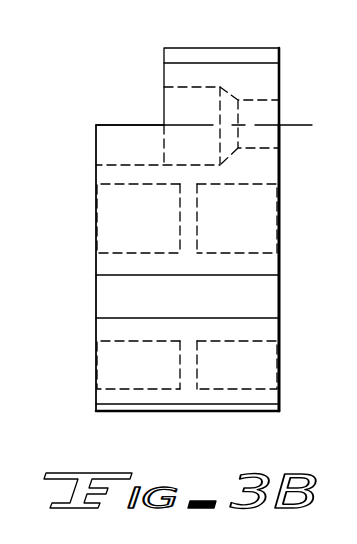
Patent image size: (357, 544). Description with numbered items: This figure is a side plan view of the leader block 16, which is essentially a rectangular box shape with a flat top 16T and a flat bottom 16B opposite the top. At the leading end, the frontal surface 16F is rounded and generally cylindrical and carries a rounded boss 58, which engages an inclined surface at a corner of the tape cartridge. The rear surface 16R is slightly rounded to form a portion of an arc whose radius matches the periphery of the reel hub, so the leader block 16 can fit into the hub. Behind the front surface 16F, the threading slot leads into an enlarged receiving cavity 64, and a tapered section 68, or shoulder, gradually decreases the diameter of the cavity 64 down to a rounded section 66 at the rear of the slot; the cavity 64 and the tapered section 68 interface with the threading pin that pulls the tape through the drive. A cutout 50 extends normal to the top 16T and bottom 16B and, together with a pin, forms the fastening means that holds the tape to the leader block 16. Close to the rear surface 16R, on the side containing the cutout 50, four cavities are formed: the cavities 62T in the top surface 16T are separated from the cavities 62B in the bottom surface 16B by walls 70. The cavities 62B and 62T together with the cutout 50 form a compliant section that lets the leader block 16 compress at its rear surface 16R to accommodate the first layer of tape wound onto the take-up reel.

The leader block 16 is at (80, 395).
The frontal surface 16F is at (235, 72).
The rear surface 16R is at (202, 413).
The top surface 16T is at (280, 230).
The bottom surface 16B is at (96, 198).
The cutout 50 is at (263, 305).
The rounded boss 58 is at (187, 57).
The cavities in top surface 62T is at (263, 212).
The cavities in bottom surface 62B is at (112, 230).
The receiving cavity 64 is at (175, 101).
The rounded section at rear of slot 66 is at (265, 142).
The tapered section 68 is at (228, 101).
The walls 70 is at (186, 234).